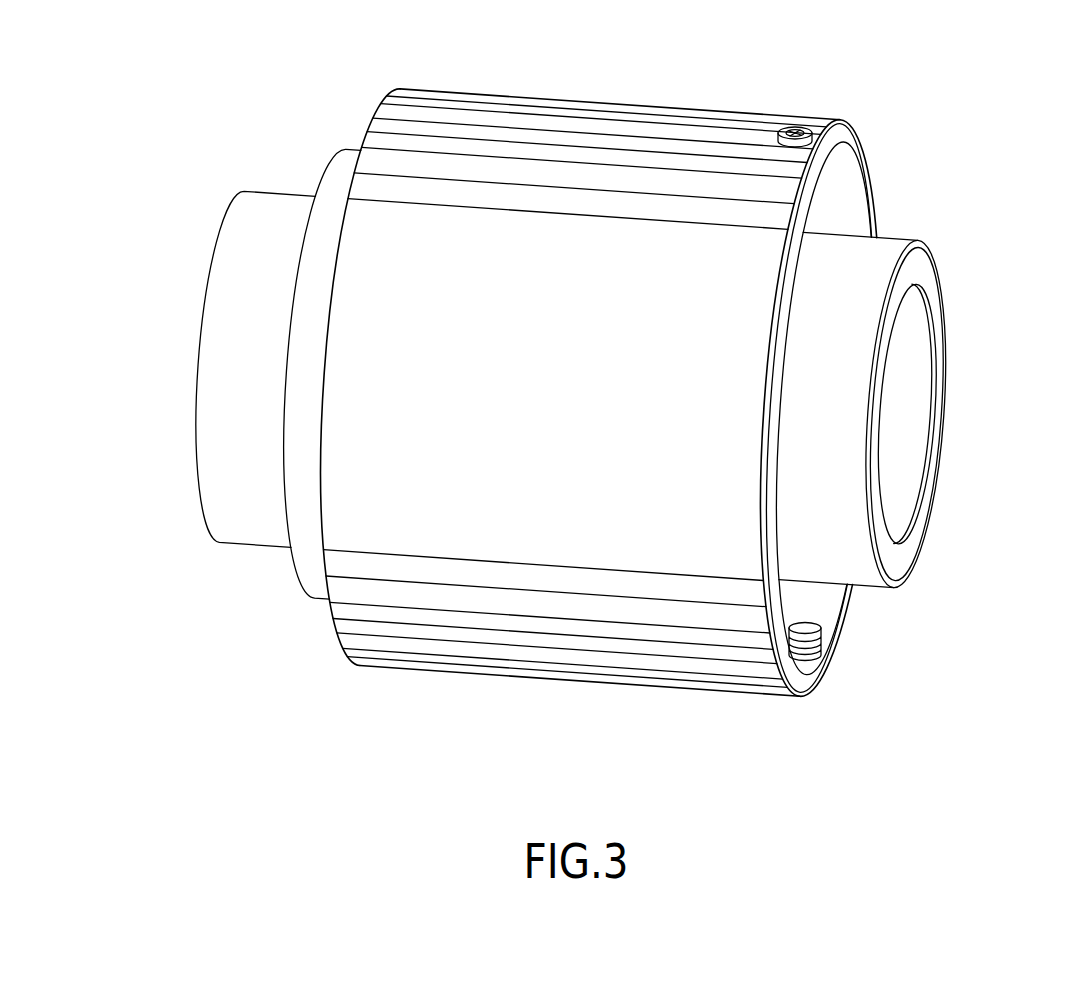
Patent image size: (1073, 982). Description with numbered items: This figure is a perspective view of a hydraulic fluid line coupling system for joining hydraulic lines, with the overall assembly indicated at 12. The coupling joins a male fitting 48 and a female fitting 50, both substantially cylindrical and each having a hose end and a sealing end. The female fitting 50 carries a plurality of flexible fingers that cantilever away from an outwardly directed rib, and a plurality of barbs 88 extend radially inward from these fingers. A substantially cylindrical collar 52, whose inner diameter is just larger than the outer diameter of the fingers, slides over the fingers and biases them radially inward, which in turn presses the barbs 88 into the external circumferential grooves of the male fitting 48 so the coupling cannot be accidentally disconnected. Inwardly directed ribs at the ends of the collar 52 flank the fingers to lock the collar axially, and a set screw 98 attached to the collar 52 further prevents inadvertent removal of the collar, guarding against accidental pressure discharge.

The sensor assembly 12 is at (834, 62).
The collar 52 is at (543, 394).
The barbs 88 is at (840, 171).
The male fitting 48 is at (936, 220).
The female fitting 50 is at (269, 213).
The set screw 98 is at (812, 625).